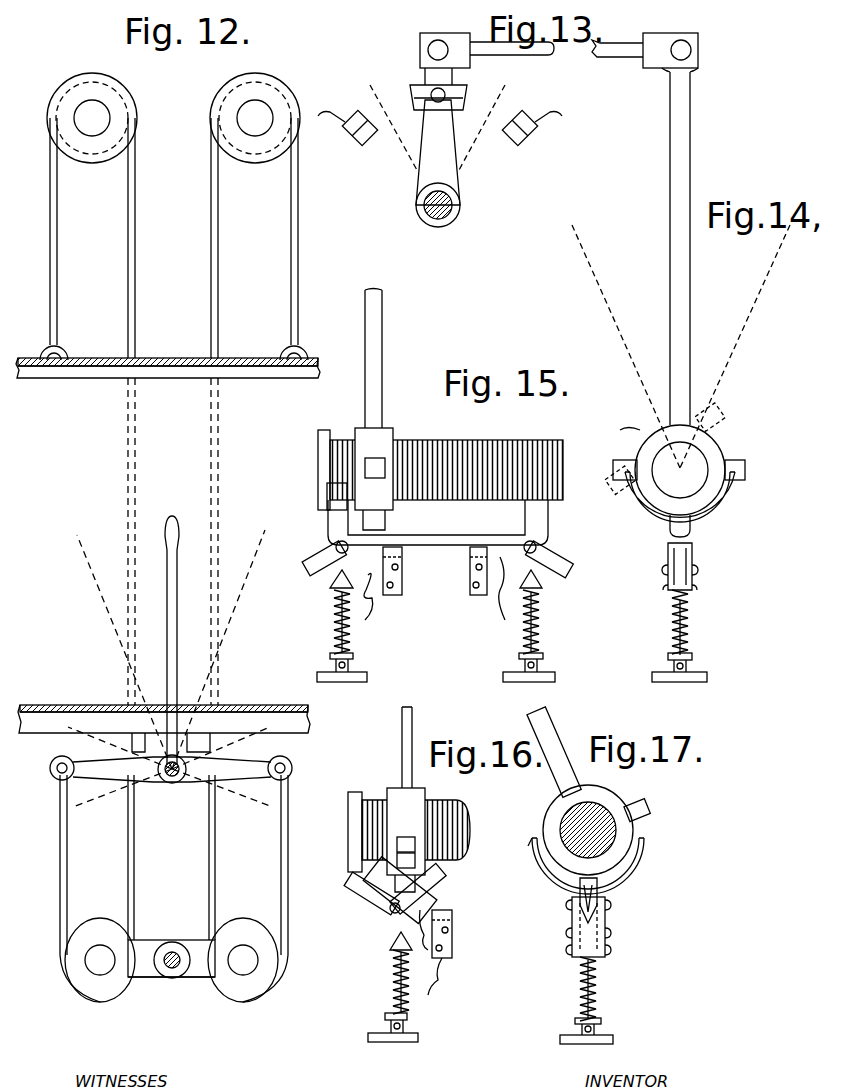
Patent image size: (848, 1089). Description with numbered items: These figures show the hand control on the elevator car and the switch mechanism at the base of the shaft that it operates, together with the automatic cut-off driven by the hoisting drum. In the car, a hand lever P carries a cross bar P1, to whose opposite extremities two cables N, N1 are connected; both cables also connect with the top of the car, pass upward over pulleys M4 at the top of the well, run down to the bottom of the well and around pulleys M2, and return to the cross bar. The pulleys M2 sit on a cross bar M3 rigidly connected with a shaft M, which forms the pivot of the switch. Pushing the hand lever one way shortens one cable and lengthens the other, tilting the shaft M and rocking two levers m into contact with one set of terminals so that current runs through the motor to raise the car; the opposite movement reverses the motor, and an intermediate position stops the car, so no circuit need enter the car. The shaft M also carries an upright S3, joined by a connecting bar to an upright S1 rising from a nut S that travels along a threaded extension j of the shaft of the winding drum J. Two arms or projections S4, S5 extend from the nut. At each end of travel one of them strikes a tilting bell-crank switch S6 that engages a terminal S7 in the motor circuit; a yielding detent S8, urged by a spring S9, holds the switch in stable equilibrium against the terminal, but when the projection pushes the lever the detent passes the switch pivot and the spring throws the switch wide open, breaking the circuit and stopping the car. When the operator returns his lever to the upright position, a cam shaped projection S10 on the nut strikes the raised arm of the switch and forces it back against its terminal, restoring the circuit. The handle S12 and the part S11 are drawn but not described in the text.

In FIG. 12, the pulleys M4 is at (173, 118).
In FIG. 12, the pulleys M2 is at (171, 960).
In FIG. 12, the cross bar M3 is at (171, 994).
In FIG. 12, the shaft M is at (172, 952).
In FIG. 13, the shaft M is at (418, 206).
In FIG. 12, the cable N is at (135, 840).
In FIG. 12, the cable N1 is at (214, 840).
In FIG. 12, the hand lever P is at (179, 640).
In FIG. 12, the cross bar P1 is at (171, 769).
In FIG. 13, the arm or upright S3 is at (415, 78).
In FIG. 13, the levers m is at (438, 146).
In FIG. 14, the handle S12 is at (645, 58).
In FIG. 14, the upright S1 is at (690, 352).
In FIG. 15, the upright S1 is at (382, 360).
In FIG. 16, the upright S1 is at (402, 723).
In FIG. 17, the upright S1 is at (545, 712).
In FIG. 15, the nut S is at (374, 479).
In FIG. 16, the nut S is at (406, 840).
In FIG. 14, the arm or projection S4 is at (746, 478).
In FIG. 17, the arm or projection S4 is at (650, 805).
In FIG. 14, the arm or projection S5 is at (616, 480).
In FIG. 17, the arm or projection S5 is at (528, 848).
In FIG. 14, the tilting switch S6 is at (722, 522).
In FIG. 15, the tilting switch S6 is at (333, 520).
In FIG. 16, the tilting switch S6 is at (366, 890).
In FIG. 17, the tilting switch S6 is at (548, 890).
In FIG. 15, the terminal S7 is at (472, 570).
In FIG. 16, the terminal S7 is at (452, 915).
In FIG. 15, the yielding detent S8 is at (345, 580).
In FIG. 16, the yielding detent S8 is at (390, 942).
In FIG. 15, the spring S9 is at (352, 636).
In FIG. 16, the spring S9 is at (392, 1002).
In FIG. 17, the cam shaped projection S10 is at (612, 898).
In FIG. 17, the spring rod S11 is at (604, 930).
In FIG. 14, the threaded extension j is at (680, 470).
In FIG. 16, the threaded extension j is at (470, 820).
In FIG. 17, the threaded extension j is at (595, 800).
In FIG. 15, the winding drum J is at (503, 440).